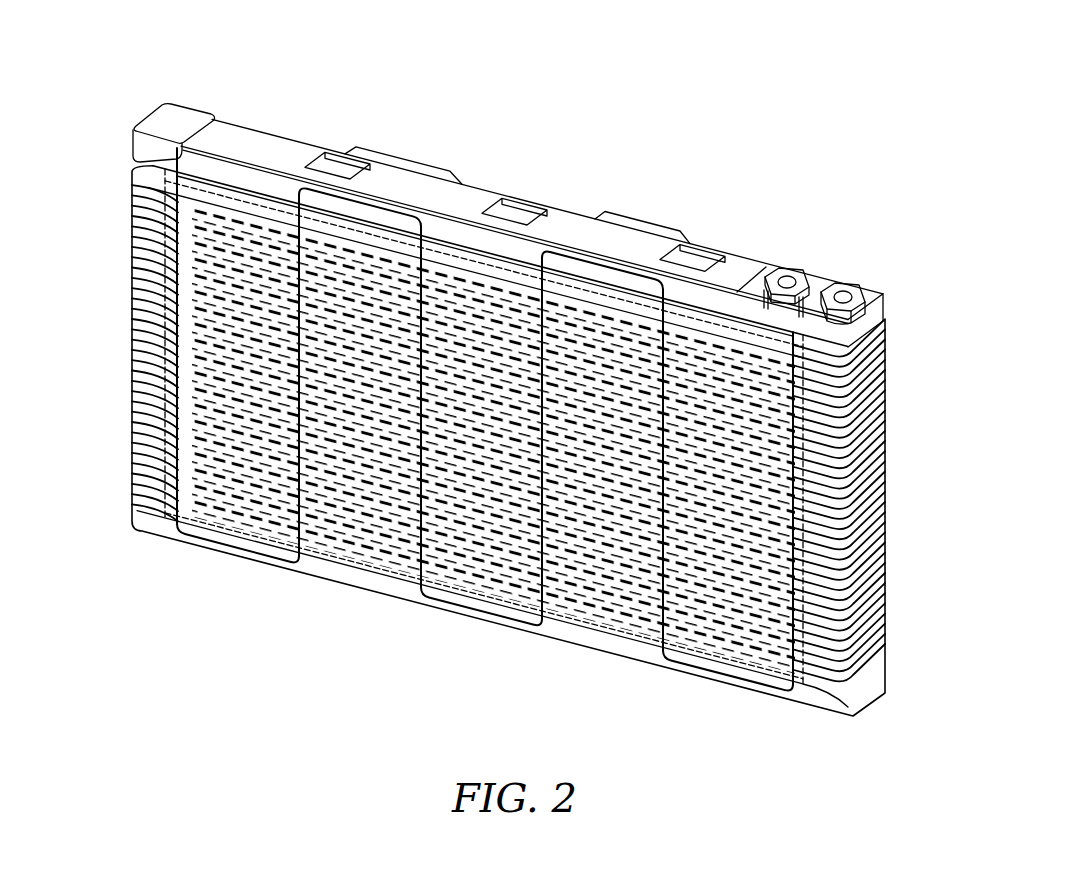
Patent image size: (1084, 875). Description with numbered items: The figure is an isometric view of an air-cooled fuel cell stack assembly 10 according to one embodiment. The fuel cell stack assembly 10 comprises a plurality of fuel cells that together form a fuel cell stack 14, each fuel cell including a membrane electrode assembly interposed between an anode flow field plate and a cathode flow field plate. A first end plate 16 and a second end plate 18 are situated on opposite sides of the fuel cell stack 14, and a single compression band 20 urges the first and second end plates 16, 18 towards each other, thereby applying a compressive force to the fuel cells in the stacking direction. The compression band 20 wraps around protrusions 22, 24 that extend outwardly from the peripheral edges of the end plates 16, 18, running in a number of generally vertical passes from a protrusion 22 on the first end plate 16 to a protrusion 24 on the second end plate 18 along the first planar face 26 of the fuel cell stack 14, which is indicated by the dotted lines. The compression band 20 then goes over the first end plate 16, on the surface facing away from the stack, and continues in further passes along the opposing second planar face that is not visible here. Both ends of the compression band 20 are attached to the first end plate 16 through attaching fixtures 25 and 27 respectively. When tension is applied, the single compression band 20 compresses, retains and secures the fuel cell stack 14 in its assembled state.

The fuel cell stack assembly 10 is at (750, 62).
The fuel cell stack 14 is at (893, 345).
The first end plate 16 is at (741, 253).
The second end plate 18 is at (363, 596).
The compression band 20 is at (158, 262).
The protrusion 22 is at (398, 198).
The protrusion 24 is at (228, 551).
The attaching fixture 25 is at (802, 266).
The first planar face 26 is at (150, 385).
The attaching fixture 27 is at (856, 284).